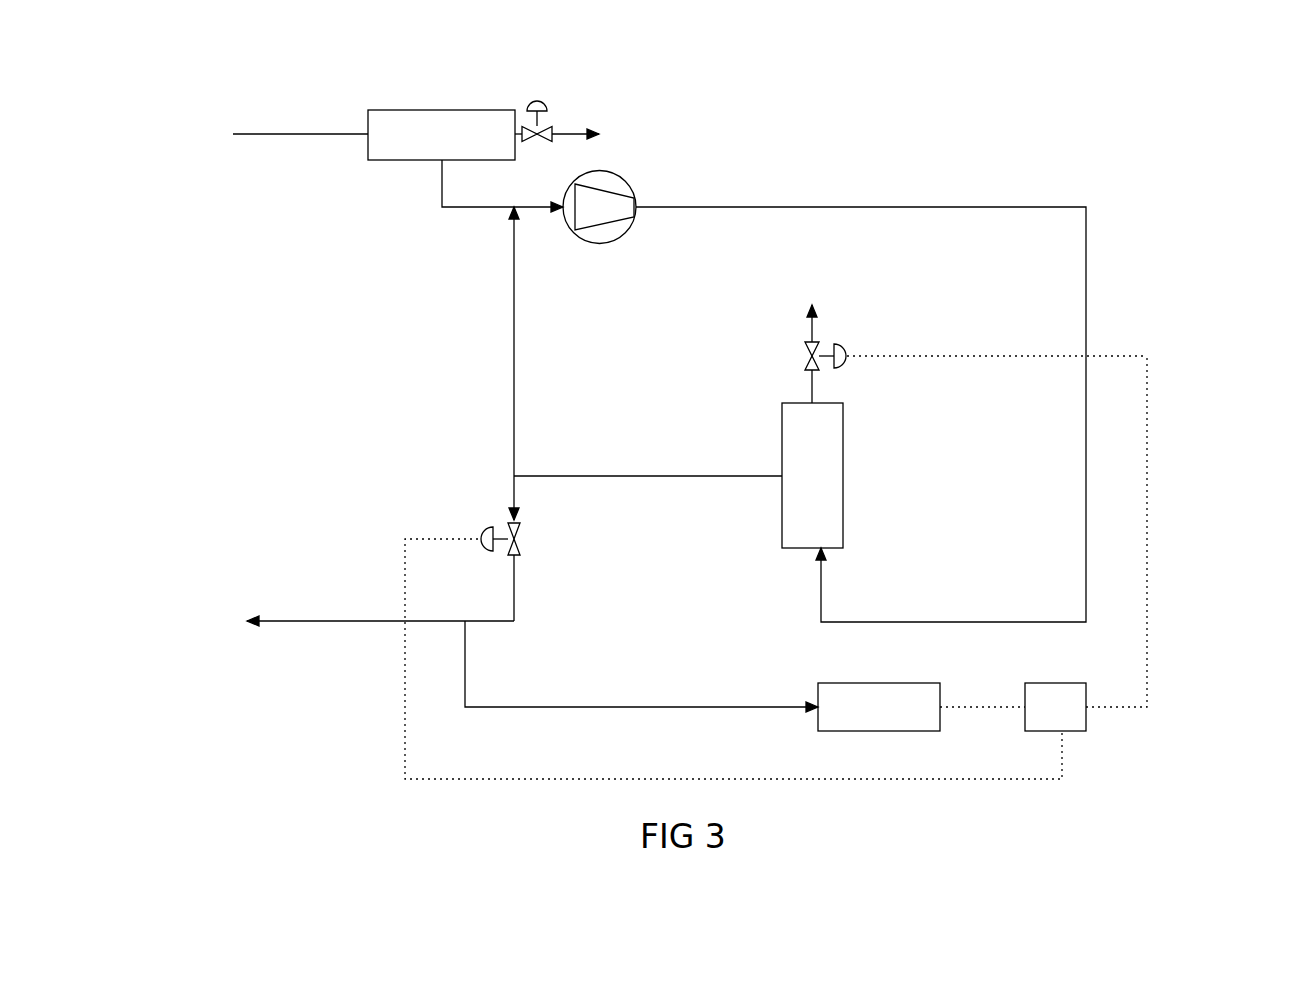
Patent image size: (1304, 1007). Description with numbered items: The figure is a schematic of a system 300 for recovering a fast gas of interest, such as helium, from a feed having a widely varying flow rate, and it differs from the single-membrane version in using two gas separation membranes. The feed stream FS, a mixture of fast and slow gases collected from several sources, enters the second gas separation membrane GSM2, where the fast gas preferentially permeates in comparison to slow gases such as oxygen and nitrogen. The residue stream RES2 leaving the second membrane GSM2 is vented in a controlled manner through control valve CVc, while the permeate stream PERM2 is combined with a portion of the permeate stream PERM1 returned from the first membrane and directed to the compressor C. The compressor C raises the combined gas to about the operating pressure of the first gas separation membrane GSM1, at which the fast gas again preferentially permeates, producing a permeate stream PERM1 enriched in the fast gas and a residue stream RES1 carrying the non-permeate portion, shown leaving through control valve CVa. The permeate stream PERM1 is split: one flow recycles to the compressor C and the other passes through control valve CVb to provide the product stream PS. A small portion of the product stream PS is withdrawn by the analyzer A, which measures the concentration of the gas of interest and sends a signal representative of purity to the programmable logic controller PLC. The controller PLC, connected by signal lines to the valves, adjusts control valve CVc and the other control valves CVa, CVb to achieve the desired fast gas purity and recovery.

The feed stream FS is at (270, 135).
The second gas separation membrane GSM2 is at (428, 135).
The permeate stream PERM2 is at (477, 207).
The control valve CVc is at (537, 101).
The residue stream RES2 is at (565, 130).
The compressor C is at (624, 184).
The permeate stream PERM1 is at (733, 476).
The first gas separation membrane GSM1 is at (818, 462).
The control valve CVa is at (843, 342).
The residue stream RES1 is at (807, 330).
The control valve CVb is at (493, 523).
The product stream PS is at (368, 621).
The analyzer A is at (867, 697).
The programmable logic controller PLC is at (1062, 707).
The system 300 is at (1185, 817).